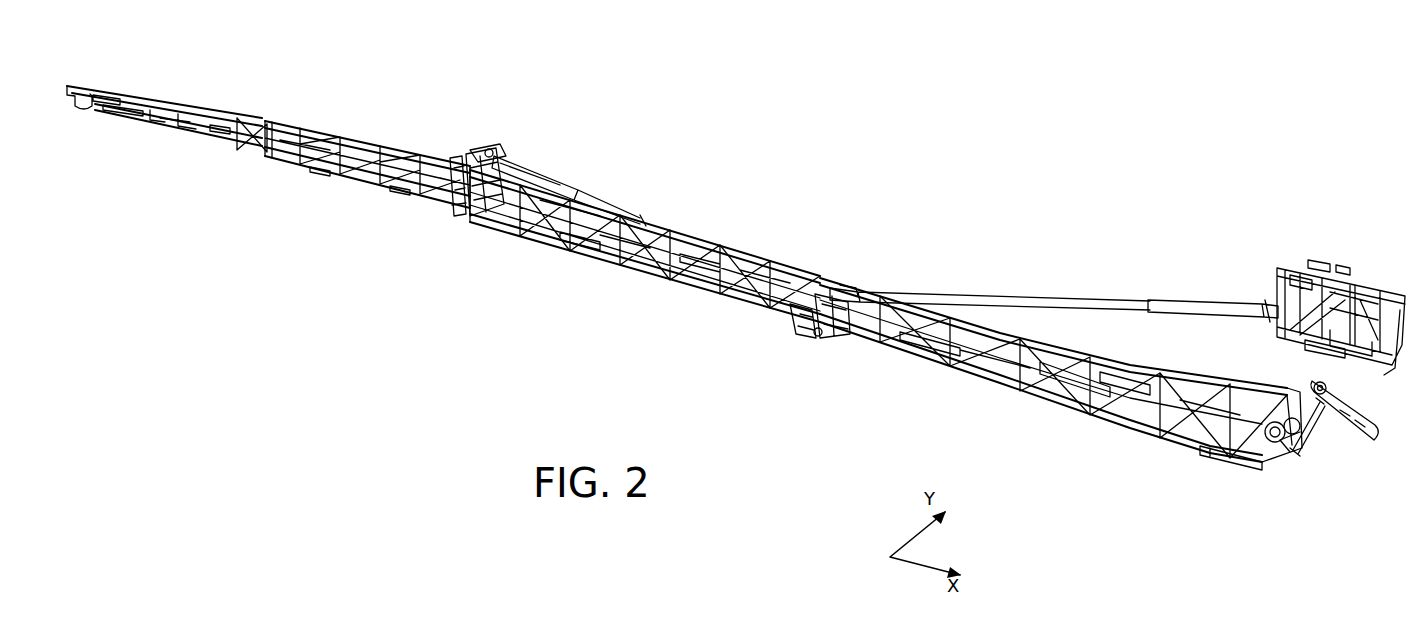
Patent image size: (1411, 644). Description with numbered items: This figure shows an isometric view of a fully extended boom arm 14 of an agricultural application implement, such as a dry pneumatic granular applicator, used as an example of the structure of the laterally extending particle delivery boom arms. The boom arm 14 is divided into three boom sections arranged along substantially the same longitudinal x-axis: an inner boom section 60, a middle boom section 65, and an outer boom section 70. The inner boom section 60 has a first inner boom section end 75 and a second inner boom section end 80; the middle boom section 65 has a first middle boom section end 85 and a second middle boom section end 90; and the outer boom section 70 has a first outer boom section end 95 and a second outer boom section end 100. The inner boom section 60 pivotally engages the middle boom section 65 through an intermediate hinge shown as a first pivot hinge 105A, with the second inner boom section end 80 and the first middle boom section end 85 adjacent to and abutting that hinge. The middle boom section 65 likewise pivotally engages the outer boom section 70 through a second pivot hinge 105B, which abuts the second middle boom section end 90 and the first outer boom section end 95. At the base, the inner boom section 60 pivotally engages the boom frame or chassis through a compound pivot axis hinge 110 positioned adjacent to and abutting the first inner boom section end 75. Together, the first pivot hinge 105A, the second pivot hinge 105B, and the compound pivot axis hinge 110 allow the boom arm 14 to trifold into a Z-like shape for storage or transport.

The boom arm 14 is at (998, 88).
The second outer boom section end 100 is at (80, 84).
The outer boom section 70 is at (302, 186).
The first outer boom section end 95 is at (447, 210).
The second middle boom section end 90 is at (478, 222).
The second pivot hinge 105B is at (493, 152).
The middle boom section 65 is at (703, 312).
The first middle boom section end 85 is at (795, 325).
The second inner boom section end 80 is at (833, 332).
The first pivot hinge 105A is at (810, 288).
The inner boom section 60 is at (1018, 411).
The first inner boom section end 75 is at (1228, 457).
The compound pivot axis hinge 110 is at (1320, 425).